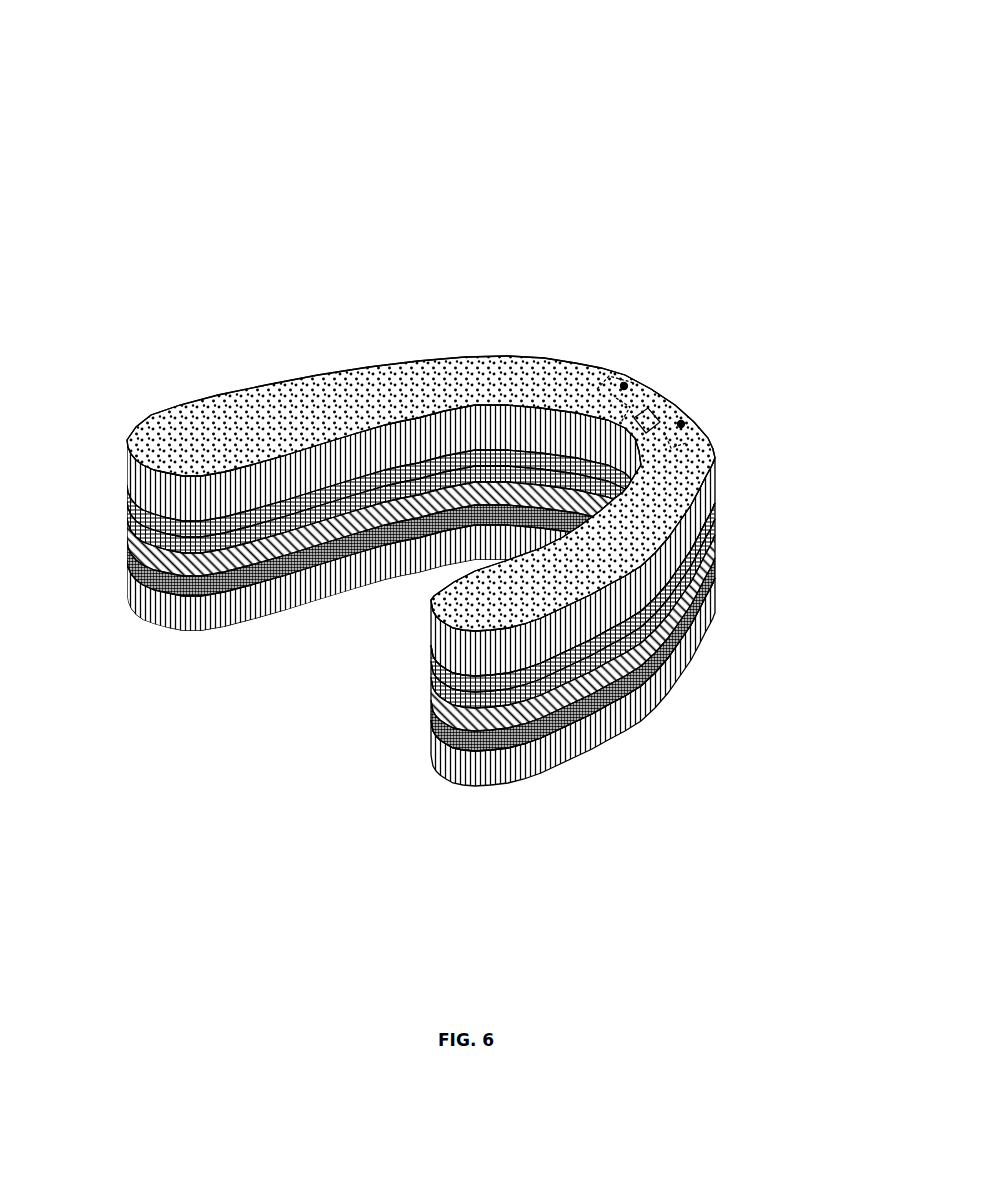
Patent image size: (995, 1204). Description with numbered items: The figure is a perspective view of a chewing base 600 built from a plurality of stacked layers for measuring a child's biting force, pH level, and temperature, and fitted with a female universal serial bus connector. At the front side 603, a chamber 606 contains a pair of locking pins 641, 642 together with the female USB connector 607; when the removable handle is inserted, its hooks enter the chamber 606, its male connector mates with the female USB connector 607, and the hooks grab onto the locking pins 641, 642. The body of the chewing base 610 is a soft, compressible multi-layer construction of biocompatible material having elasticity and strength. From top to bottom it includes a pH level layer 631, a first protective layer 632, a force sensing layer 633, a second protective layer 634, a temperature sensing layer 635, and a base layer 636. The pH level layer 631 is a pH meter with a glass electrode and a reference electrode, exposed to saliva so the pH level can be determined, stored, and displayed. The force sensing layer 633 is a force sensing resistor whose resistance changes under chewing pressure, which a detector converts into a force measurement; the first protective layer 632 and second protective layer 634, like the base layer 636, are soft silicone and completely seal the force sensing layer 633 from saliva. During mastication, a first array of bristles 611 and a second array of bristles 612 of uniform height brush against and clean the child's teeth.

The chewing base 600 is at (478, 118).
The front side 603 is at (707, 445).
The chamber 606 is at (650, 398).
The female universal serial bus (USB) connector 607 is at (632, 408).
The chewing base 610 is at (405, 632).
The first array of bristles 611 is at (507, 479).
The second array of bristles 612 is at (543, 762).
The pH level layer 631 is at (118, 480).
The first protective layer 632 is at (118, 497).
The force sensing layer 633 is at (118, 515).
The second protective layer 634 is at (118, 530).
The temperature sensing layer 635 is at (118, 537).
The base layer 636 is at (405, 683).
The locking pin 641 is at (615, 376).
The locking pin 642 is at (677, 416).